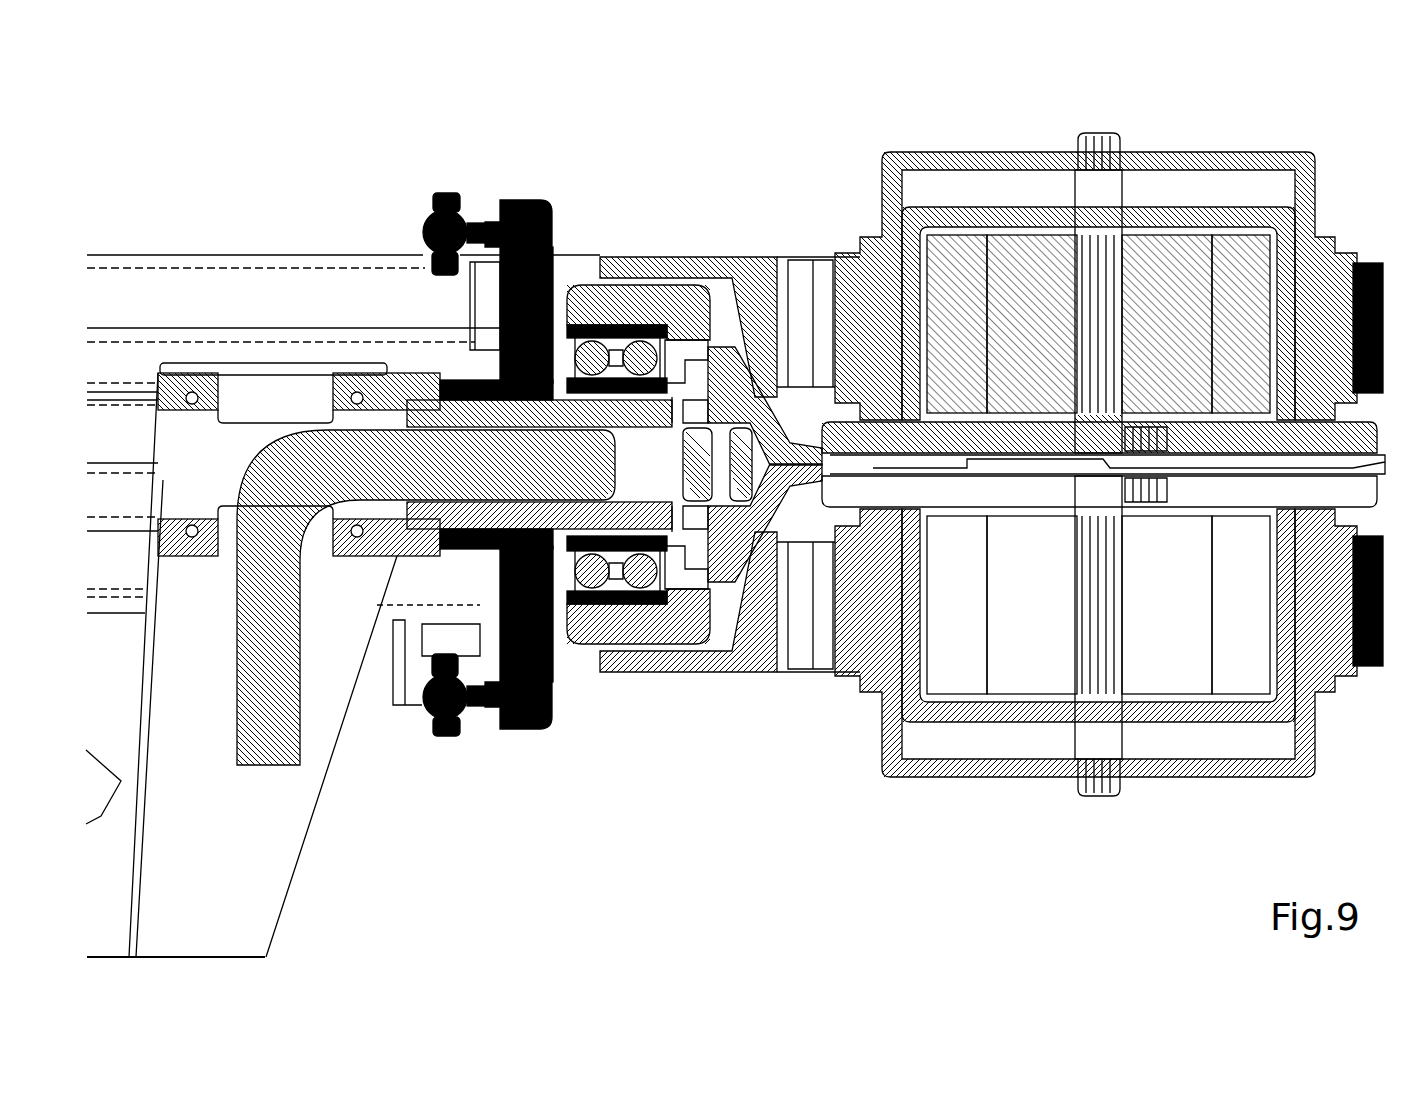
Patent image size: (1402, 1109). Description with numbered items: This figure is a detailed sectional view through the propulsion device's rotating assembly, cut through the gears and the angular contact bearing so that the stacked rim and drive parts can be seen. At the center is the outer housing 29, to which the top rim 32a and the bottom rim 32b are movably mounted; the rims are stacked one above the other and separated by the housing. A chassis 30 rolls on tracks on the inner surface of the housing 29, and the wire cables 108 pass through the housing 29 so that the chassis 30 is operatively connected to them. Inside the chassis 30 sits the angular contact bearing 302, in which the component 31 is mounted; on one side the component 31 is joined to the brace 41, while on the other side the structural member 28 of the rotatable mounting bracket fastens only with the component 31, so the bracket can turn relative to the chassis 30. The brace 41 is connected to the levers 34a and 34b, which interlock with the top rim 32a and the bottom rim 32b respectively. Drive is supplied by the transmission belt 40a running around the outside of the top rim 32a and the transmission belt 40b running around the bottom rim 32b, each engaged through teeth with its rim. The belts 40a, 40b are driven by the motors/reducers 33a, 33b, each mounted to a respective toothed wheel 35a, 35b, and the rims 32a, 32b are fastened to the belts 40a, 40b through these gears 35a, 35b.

The structural member 28 is at (415, 378).
The wire cables 108 is at (460, 383).
The lever 34a is at (448, 193).
The lever 34b is at (453, 744).
The brace 41 is at (553, 227).
The component 31 is at (678, 412).
The top rim 32a is at (749, 262).
The bottom rim 32b is at (764, 677).
The chassis 30 is at (670, 600).
The angular contact bearing 302 is at (603, 650).
The outer housing 29 is at (748, 600).
The transmission belt 40a is at (1050, 143).
The transmission belt 40b is at (960, 780).
The toothed wheel 35a is at (1190, 142).
The toothed wheel 35b is at (1193, 785).
The motor/reducer 33a is at (1247, 290).
The motor/reducer 33b is at (1250, 640).